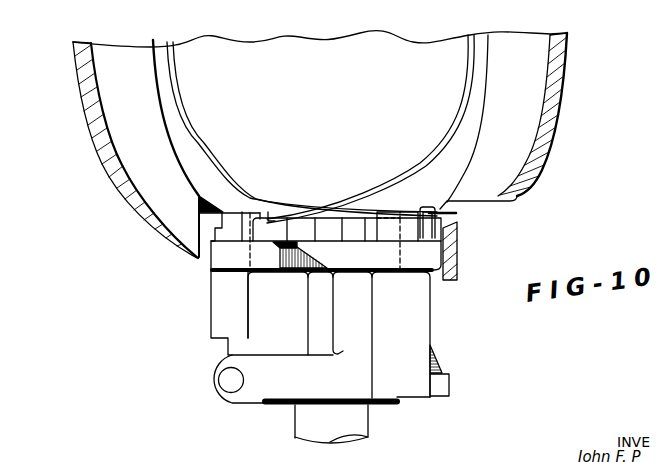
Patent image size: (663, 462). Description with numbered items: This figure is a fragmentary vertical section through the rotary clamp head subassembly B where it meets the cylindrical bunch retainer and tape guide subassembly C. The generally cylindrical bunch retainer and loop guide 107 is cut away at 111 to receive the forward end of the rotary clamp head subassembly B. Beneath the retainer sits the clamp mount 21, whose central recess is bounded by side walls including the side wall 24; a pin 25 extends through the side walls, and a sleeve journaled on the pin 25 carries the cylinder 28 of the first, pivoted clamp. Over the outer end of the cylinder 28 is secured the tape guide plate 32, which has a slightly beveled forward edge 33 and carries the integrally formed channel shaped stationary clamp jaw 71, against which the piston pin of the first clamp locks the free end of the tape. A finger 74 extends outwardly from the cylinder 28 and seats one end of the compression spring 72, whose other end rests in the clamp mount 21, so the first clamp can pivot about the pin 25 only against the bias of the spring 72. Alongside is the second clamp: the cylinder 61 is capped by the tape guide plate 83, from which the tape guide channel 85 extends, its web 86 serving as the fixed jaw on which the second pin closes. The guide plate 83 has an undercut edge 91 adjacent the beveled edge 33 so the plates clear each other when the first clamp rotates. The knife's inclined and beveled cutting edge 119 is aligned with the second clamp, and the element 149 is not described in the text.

The bunch retainer and loop guide 107 is at (78, 60).
The cylindrical bunch retainer and tape guide subassembly C is at (573, 53).
The liner 149 is at (466, 85).
The cut-away 111 is at (204, 252).
The tape guide plate 32 is at (233, 265).
The rotary clamp head subassembly B is at (208, 308).
The stationary clamp jaw 71 is at (259, 212).
The tape guide plate 83 is at (391, 260).
The beveled forward edge 33 is at (285, 243).
The undercut edge 91 is at (300, 277).
The web 86 is at (409, 209).
The tape guide channel 85 is at (430, 220).
The cutting edge 119 is at (457, 253).
The cylinder 28 is at (278, 313).
The finger 74 is at (311, 310).
The cylinder 61 is at (408, 343).
The compression spring 72 is at (441, 356).
The clamp mount 21 is at (452, 385).
The side wall 24 is at (248, 396).
The pin 25 is at (222, 386).